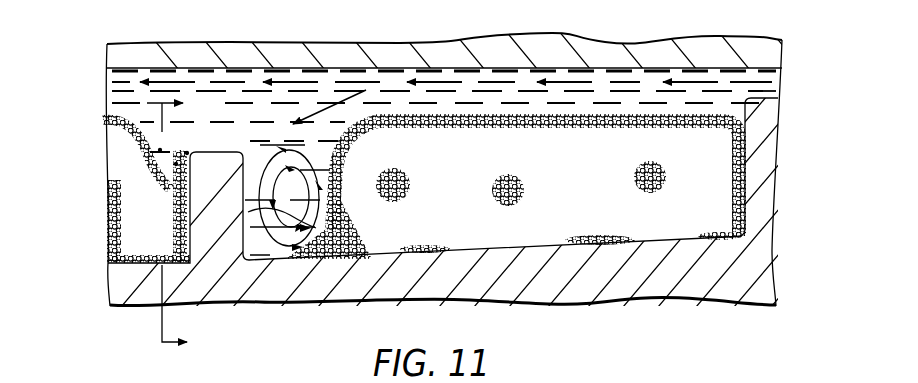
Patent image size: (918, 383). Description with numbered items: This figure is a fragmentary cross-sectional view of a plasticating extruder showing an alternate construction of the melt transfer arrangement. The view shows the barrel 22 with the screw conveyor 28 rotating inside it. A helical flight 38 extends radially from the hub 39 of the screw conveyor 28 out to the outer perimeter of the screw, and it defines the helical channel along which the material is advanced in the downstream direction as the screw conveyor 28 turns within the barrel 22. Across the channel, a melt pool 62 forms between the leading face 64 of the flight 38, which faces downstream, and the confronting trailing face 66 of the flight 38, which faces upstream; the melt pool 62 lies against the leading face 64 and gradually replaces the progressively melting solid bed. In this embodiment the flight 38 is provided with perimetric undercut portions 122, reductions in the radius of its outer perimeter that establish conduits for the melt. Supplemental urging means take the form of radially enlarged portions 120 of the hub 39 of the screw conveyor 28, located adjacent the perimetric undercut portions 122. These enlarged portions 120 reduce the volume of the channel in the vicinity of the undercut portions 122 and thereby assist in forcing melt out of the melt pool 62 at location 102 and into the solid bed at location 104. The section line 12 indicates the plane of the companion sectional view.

The section line 12- 12 is at (184, 224).
The barrel 22 is at (594, 52).
The screw conveyor 28 is at (760, 254).
The helical flight 38 is at (202, 172).
The hub 39 is at (540, 248).
The melt pool 62 is at (346, 174).
The leading face 64 is at (318, 224).
The trailing face 66 is at (180, 236).
The location 102 is at (257, 186).
The location 104 is at (180, 197).
The radially enlarged portions 120 is at (467, 248).
The perimetric undercut portions 122 is at (178, 139).